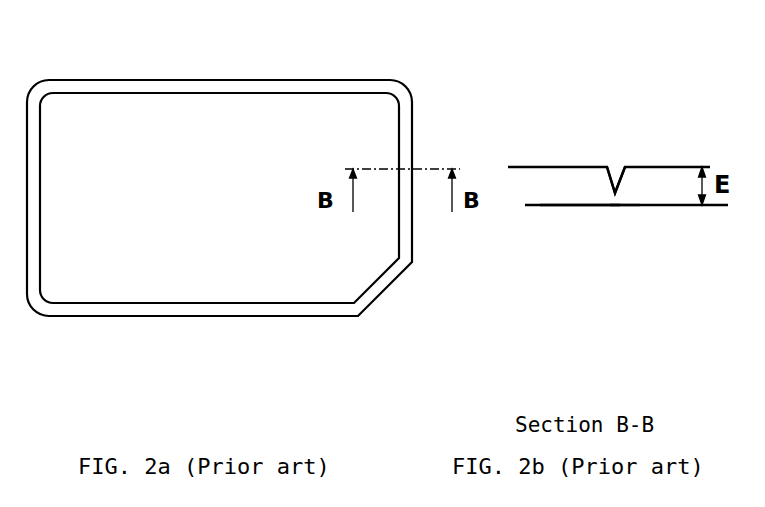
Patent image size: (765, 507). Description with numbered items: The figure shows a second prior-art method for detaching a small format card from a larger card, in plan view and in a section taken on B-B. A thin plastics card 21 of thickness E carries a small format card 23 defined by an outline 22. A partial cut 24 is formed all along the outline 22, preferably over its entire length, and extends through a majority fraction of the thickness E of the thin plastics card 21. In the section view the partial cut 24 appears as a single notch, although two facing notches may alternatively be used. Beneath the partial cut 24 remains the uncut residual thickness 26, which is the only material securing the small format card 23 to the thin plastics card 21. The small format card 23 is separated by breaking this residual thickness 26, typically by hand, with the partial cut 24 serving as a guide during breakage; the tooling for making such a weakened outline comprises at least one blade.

In FIG. 2A, the thin plastics card 21 is at (128, 48).
In FIG. 2B, the thin plastics card 21 is at (658, 177).
In FIG. 2A, the outline 22 is at (173, 305).
In FIG. 2A, the small format card 23 is at (175, 195).
In FIG. 2B, the small format card 23 is at (575, 192).
In FIG. 2A, the partial cut 24 is at (282, 83).
In FIG. 2B, the partial cut 24 is at (615, 172).
In FIG. 2B, the uncut residual thickness 26 is at (617, 198).